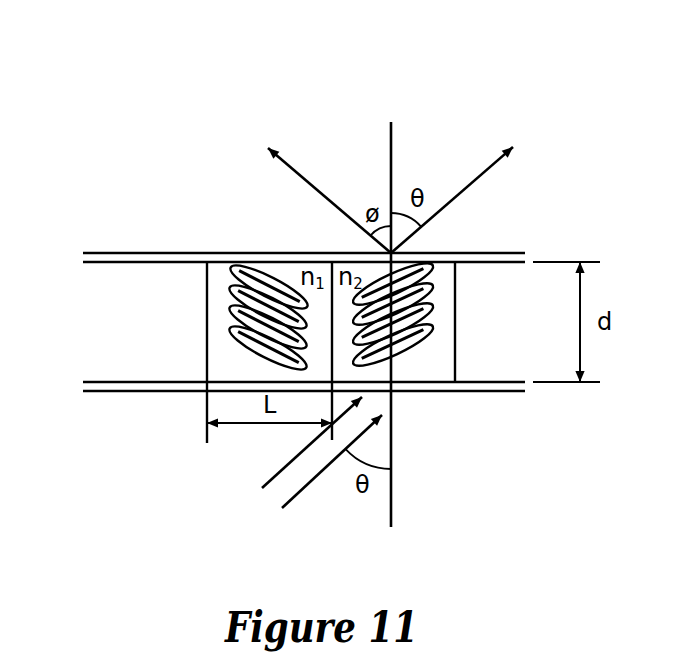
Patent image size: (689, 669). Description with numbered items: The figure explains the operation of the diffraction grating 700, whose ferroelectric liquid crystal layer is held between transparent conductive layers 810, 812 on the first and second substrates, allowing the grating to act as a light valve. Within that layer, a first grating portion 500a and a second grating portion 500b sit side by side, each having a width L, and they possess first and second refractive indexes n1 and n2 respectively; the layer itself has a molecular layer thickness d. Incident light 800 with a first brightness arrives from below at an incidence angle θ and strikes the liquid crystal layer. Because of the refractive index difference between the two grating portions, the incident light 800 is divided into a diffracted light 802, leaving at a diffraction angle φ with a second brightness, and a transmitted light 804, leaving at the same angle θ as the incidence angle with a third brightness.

The diffraction grating 700 is at (167, 147).
The transparent conductive layer 810 is at (108, 253).
The transparent conductive layer 812 is at (92, 393).
The diffracted light 802 is at (298, 174).
The transmitted light 804 is at (475, 180).
The first grating portion 500a is at (425, 337).
The second grating portion 500b is at (247, 340).
The incident light 800 is at (307, 488).